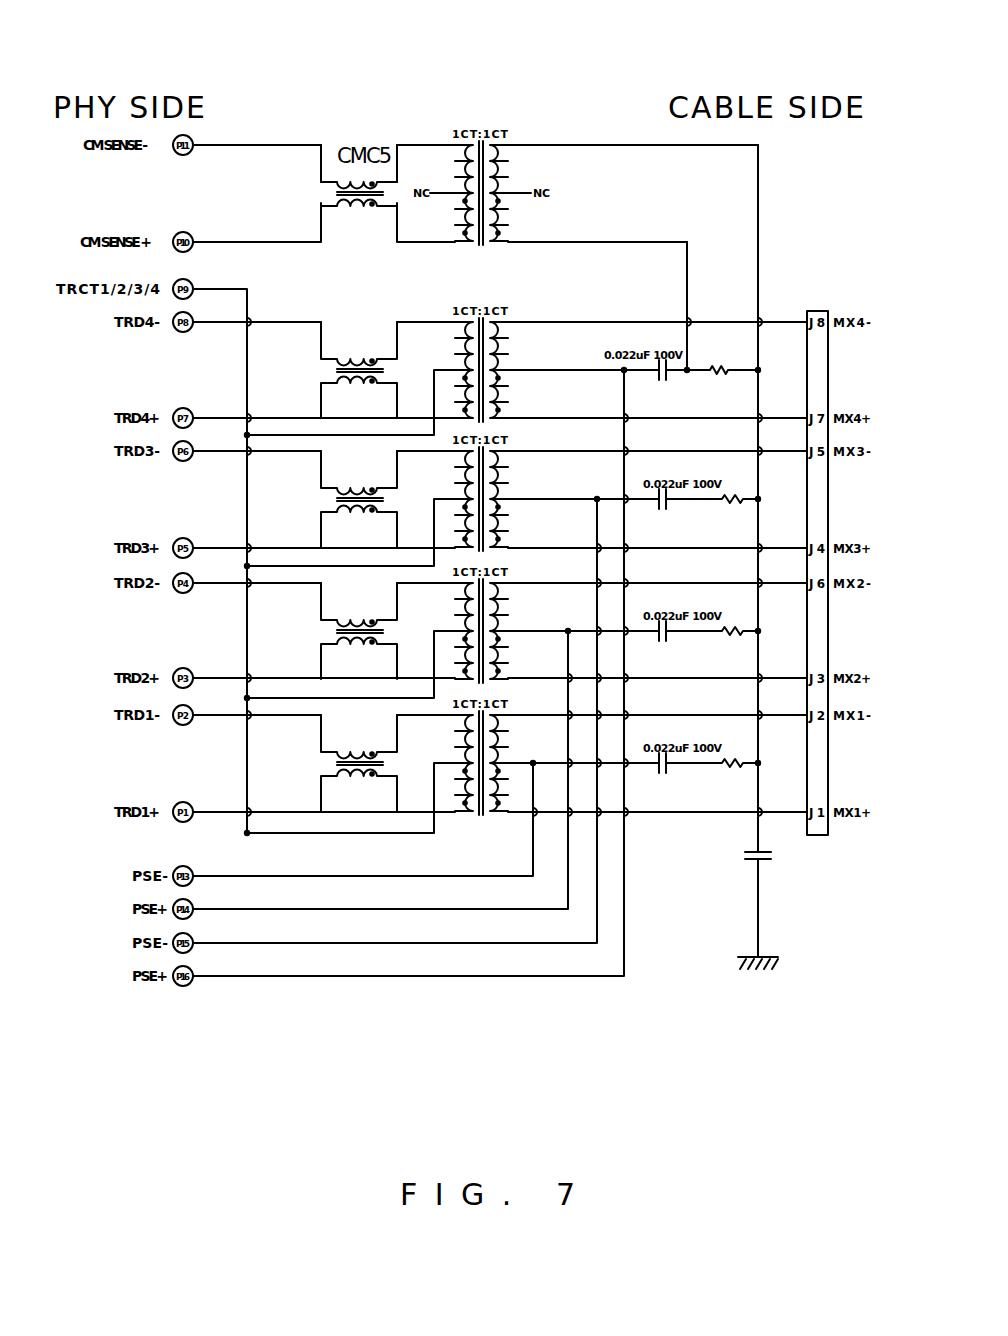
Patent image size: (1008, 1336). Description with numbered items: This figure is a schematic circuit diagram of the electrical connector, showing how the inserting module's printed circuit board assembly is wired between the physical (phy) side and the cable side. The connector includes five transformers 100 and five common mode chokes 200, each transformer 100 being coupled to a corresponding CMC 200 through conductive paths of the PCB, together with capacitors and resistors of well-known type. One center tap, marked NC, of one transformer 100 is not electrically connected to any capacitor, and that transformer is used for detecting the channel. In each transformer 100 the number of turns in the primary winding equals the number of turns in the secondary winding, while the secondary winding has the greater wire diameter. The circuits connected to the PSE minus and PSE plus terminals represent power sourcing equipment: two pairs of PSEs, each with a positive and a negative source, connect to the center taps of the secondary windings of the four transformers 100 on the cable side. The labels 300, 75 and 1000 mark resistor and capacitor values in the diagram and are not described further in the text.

The transformer 100 is at (485, 145).
The common mode choke 200 is at (358, 190).
The 300 ohm resistor 300 is at (712, 317).
The 75 ohm resistor 75 is at (712, 639).
The 1000pF 2KV capacitor 1000 is at (802, 858).